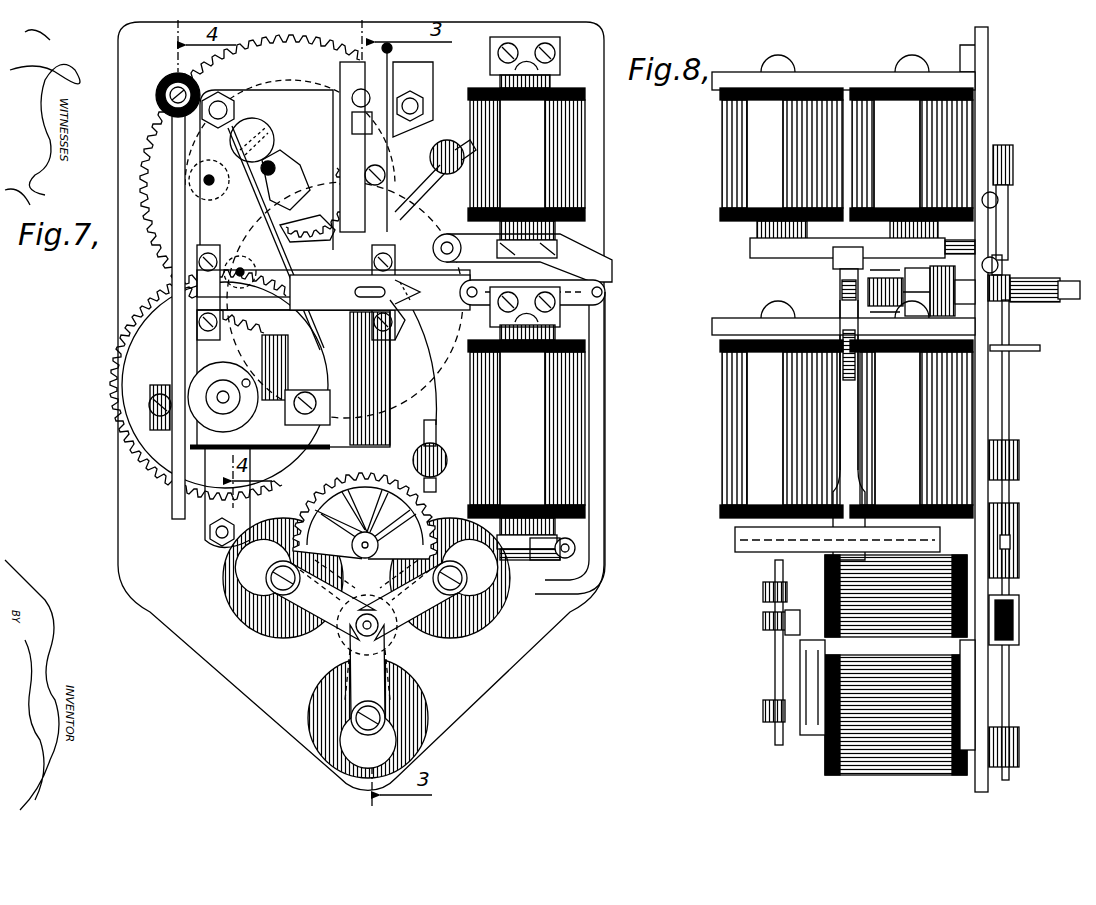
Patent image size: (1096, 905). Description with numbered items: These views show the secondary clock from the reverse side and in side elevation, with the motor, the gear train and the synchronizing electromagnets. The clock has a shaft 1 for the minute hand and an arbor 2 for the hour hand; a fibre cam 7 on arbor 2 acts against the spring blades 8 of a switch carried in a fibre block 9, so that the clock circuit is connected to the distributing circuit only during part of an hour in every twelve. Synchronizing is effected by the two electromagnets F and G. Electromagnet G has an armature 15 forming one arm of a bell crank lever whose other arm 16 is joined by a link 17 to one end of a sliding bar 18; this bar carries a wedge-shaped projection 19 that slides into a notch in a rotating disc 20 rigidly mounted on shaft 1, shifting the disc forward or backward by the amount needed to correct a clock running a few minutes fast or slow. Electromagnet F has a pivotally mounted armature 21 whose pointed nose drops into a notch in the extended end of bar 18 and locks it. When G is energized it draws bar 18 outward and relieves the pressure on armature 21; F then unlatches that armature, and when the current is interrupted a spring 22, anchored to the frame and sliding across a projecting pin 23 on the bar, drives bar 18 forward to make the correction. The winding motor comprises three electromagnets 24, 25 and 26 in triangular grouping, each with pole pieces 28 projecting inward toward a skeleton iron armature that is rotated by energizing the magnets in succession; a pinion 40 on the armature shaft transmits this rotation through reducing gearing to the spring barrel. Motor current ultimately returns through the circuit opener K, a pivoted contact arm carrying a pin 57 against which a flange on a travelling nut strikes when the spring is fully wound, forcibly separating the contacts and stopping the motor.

In FIG. 7, the circuit opener K is at (178, 110).
In FIG. 7, the spring 22 is at (288, 180).
In FIG. 7, the rotating disc 20 is at (402, 348).
In FIG. 7, the projecting pin 23 is at (267, 313).
In FIG. 7, the pin 57 is at (200, 397).
In FIG. 7, the shaft 1 is at (368, 285).
In FIG. 8, the shaft 1 is at (1068, 285).
In FIG. 7, the sliding bar 18 is at (423, 305).
In FIG. 7, the wedge-shaped projection 19 is at (443, 282).
In FIG. 7, the link 17 is at (573, 306).
In FIG. 8, the link 17 is at (840, 292).
In FIG. 7, the electromagnet F is at (567, 156).
In FIG. 8, the electromagnet F is at (747, 147).
In FIG. 7, the armature 21 is at (557, 247).
In FIG. 8, the armature 21 is at (796, 250).
In FIG. 7, the electromagnet G is at (570, 437).
In FIG. 8, the electromagnet G is at (762, 422).
In FIG. 7, the arm 16 is at (593, 386).
In FIG. 8, the arm 16 is at (850, 415).
In FIG. 7, the armature 15 is at (555, 560).
In FIG. 7, the electromagnet 24 is at (247, 630).
In FIG. 7, the electromagnet 26 is at (472, 623).
In FIG. 8, the electromagnet 26 is at (838, 577).
In FIG. 7, the electromagnet 25 is at (317, 728).
In FIG. 8, the electromagnet 25 is at (896, 715).
In FIG. 8, the pole pieces 28 is at (975, 678).
In FIG. 8, the pinion 40 is at (790, 622).
In FIG. 8, the fibre block 9 is at (1010, 162).
In FIG. 8, the spring blades 8 is at (1000, 268).
In FIG. 8, the arbor 2 is at (1033, 282).
In FIG. 8, the cam 7 is at (1000, 305).